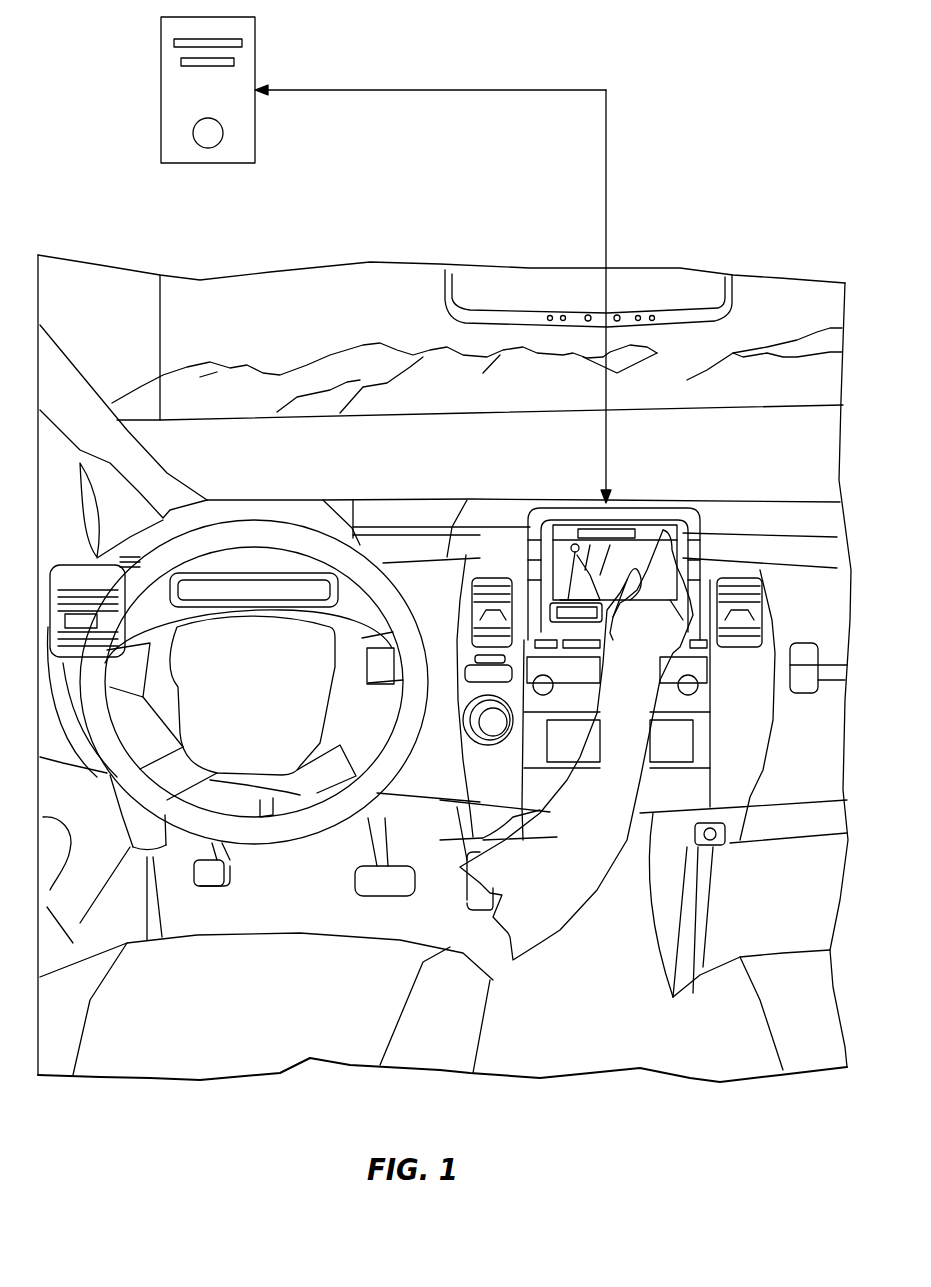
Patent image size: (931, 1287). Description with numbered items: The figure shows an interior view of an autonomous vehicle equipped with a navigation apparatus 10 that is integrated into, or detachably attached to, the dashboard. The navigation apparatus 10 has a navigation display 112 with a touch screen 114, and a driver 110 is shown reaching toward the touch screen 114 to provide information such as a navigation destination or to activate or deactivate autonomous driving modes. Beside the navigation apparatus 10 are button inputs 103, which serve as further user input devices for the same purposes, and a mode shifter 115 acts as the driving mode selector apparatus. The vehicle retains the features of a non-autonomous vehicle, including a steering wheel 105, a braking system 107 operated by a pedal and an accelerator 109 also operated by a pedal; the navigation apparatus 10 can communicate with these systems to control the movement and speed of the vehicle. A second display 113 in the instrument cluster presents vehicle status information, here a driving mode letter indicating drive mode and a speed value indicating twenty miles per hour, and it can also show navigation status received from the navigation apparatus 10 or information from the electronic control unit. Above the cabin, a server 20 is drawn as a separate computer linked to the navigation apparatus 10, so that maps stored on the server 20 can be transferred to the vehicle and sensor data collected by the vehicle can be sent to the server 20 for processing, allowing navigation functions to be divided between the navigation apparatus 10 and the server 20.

The navigation apparatus 10 is at (575, 524).
The server 20 is at (255, 52).
The button inputs 103 is at (700, 578).
The steering wheel 105 is at (250, 525).
The braking system 107 is at (217, 878).
The accelerator 109 is at (366, 880).
The driver 110 is at (542, 932).
The navigation display 112 is at (627, 540).
The second display 113 is at (400, 510).
The touch screen 114 is at (655, 504).
The mode shifter 115 is at (440, 620).